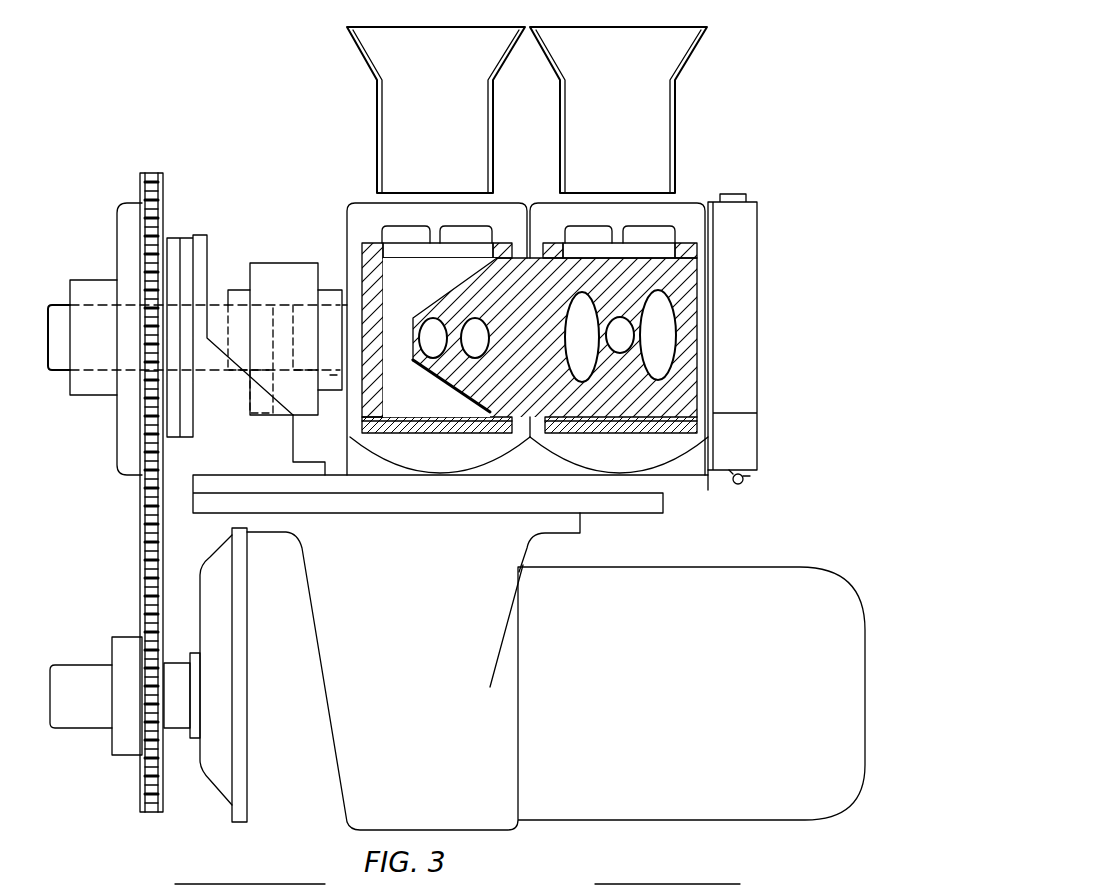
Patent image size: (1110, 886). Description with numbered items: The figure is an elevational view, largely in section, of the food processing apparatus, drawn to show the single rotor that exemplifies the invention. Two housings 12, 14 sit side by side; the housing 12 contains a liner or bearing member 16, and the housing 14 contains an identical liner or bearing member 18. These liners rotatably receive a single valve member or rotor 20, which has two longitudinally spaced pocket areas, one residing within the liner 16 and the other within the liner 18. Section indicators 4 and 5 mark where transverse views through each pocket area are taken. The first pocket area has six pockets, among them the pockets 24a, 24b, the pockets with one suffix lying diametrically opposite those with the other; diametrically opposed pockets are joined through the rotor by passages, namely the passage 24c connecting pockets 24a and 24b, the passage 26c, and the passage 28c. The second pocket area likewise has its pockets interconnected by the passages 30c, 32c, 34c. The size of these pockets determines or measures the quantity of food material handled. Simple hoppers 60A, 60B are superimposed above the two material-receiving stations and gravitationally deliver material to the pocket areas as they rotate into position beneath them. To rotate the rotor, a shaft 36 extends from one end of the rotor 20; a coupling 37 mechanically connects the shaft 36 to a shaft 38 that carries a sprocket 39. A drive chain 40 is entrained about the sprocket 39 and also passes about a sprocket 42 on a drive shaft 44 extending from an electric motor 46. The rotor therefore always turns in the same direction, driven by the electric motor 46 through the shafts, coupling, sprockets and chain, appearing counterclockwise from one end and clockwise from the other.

The section line 4- 4 is at (393, 15).
The section line 5- 5 is at (658, 15).
The housing 12 is at (373, 243).
The housing 14 is at (683, 243).
The liner or bearing member 16 is at (505, 243).
The liner or bearing member 18 is at (547, 243).
The valve member or rotor 20 is at (685, 275).
The pocket 24a is at (385, 273).
The pocket 24b is at (465, 407).
The passage 24c is at (362, 373).
The passage 26c is at (440, 337).
The passage 28c is at (435, 317).
The passage 30c is at (663, 308).
The passage 32c is at (628, 335).
The passage 34c is at (590, 370).
The shaft 36 is at (333, 292).
The coupling 37 is at (273, 278).
The shaft 38 is at (217, 312).
The sprocket 39 is at (157, 222).
The drive chain 40 is at (142, 520).
The sprocket 42 is at (142, 768).
The drive shaft 44 is at (82, 678).
The electric motor 46 is at (666, 704).
The hopper 60A is at (395, 105).
The hopper 60B is at (658, 106).